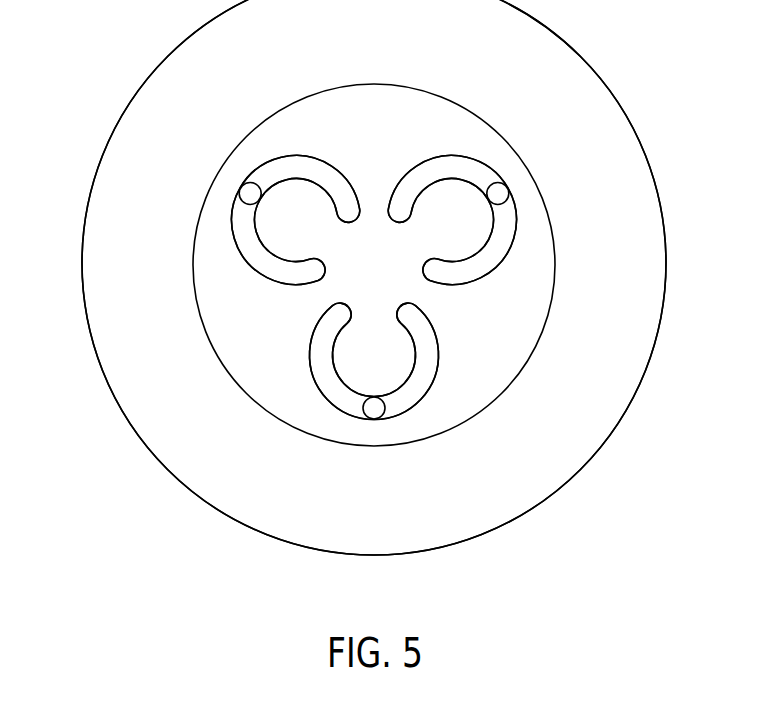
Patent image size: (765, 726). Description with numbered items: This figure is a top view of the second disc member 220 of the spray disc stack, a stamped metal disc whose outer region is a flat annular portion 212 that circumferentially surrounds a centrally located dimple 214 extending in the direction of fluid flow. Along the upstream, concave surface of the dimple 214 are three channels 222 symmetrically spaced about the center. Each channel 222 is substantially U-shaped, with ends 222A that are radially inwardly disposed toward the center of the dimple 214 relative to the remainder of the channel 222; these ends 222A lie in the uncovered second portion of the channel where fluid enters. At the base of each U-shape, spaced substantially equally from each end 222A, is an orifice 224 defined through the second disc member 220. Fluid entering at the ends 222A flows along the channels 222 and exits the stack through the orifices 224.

The flat annular portion 212 is at (653, 263).
The dimple 214 is at (522, 342).
The second disc member 220 is at (82, 265).
The channel 222 is at (293, 157).
The end 222A is at (387, 211).
The orifice 224 is at (373, 413).